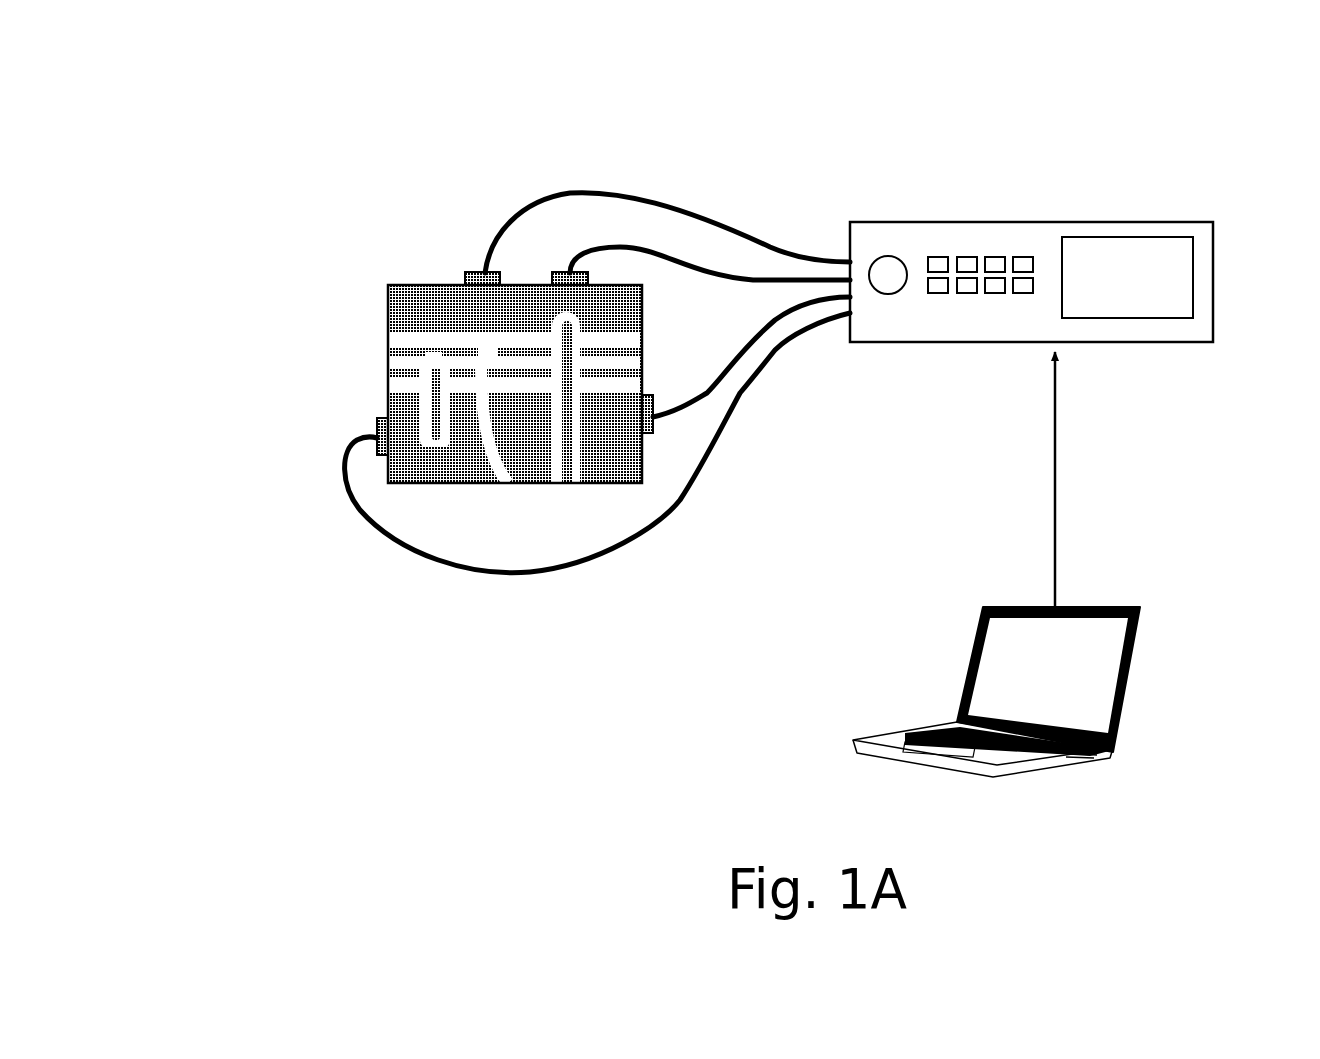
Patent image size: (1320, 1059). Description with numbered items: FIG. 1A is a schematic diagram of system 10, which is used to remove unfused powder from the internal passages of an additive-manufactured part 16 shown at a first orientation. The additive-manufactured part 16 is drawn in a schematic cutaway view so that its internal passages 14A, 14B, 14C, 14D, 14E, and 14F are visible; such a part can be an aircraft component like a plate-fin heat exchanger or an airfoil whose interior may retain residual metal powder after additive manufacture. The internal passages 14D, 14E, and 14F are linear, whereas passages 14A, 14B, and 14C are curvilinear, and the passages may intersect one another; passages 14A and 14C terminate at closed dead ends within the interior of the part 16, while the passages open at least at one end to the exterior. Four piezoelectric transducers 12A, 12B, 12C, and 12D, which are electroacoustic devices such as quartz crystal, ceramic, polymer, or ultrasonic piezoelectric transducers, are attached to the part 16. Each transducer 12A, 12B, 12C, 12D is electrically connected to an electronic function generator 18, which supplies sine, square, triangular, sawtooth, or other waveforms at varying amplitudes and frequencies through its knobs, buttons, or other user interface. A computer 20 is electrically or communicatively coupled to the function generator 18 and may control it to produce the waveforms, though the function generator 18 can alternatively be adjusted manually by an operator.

The system 10 is at (1072, 90).
The piezoelectric transducer 12A is at (475, 272).
The piezoelectric transducer 12B is at (560, 272).
The piezoelectric transducer 12C is at (648, 395).
The piezoelectric transducer 12D is at (377, 427).
The internal passage 14A is at (427, 458).
The internal passage 14B is at (475, 450).
The internal passage 14C is at (560, 423).
The internal passage 14D is at (393, 385).
The internal passage 14E is at (393, 360).
The internal passage 14F is at (393, 338).
The additive-manufactured part 16 is at (413, 283).
The electronic function generator 18 is at (1080, 222).
The computer 20 is at (1130, 683).